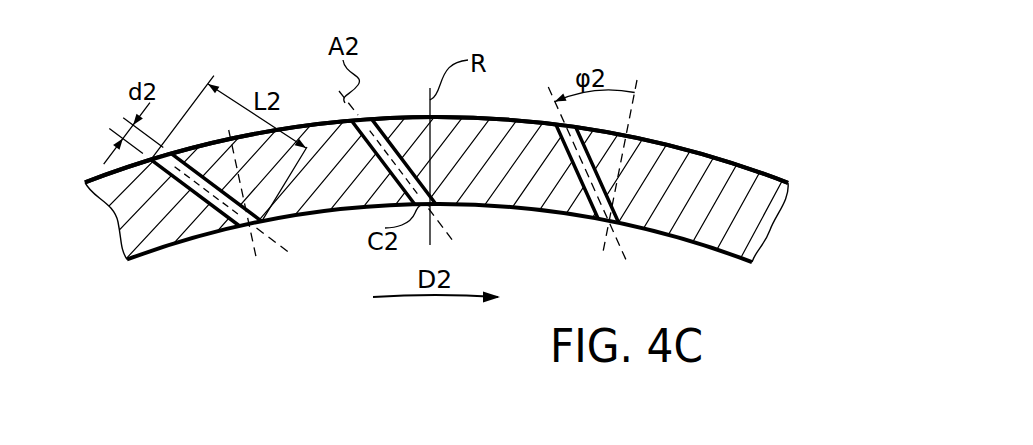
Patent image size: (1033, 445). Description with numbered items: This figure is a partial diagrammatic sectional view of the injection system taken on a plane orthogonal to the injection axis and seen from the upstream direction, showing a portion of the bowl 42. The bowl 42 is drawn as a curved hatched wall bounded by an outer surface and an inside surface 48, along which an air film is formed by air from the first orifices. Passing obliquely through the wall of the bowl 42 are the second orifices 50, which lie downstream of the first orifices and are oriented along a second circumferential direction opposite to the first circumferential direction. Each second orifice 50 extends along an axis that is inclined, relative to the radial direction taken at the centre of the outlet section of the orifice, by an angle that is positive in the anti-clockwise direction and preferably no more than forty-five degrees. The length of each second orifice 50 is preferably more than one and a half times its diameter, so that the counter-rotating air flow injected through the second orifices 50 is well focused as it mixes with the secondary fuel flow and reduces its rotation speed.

The bowl 42 is at (753, 187).
The inside surface of the bowl 48 is at (547, 212).
The second orifices 50 is at (240, 224).